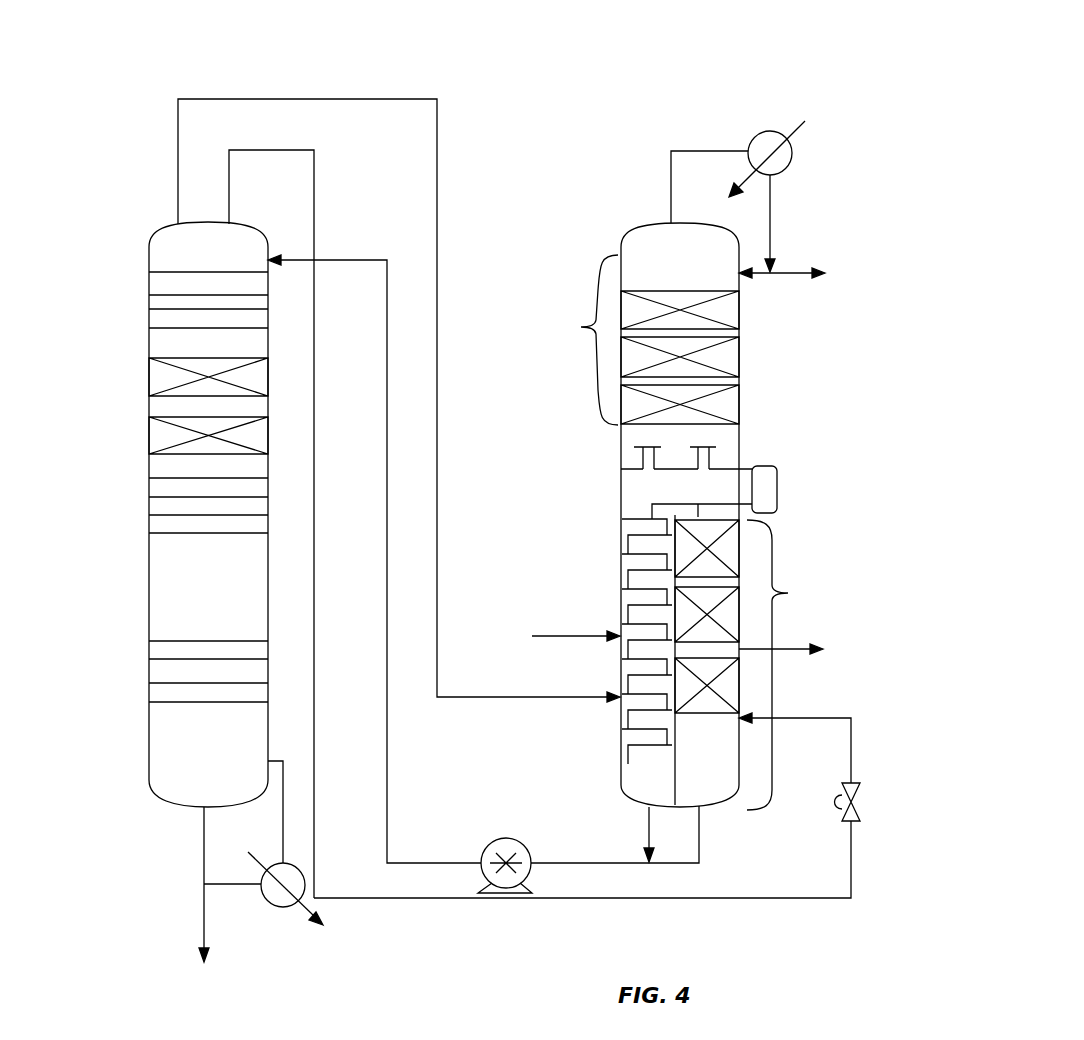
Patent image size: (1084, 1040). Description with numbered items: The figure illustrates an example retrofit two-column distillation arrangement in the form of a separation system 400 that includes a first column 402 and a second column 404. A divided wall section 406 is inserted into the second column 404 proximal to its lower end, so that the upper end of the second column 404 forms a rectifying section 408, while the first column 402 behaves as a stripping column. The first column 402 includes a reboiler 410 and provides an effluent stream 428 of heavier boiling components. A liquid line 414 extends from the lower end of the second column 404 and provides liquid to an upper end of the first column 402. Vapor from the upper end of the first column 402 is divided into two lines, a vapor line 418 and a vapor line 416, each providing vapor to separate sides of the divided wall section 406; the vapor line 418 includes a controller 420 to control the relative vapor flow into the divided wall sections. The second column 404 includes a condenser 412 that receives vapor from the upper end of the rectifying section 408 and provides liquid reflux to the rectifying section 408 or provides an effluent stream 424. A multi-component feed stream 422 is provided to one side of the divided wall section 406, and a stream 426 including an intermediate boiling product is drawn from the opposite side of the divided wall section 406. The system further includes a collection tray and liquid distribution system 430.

The separation system 400 is at (563, 58).
The first column 402 is at (149, 598).
The second column 404 is at (620, 490).
The divided wall section 406 is at (791, 665).
The rectifying section 408 is at (572, 340).
The reboiler 410 is at (283, 907).
The condenser 412 is at (792, 165).
The liquid line 414 is at (392, 822).
The vapor line 416 is at (437, 200).
The vapor line 418 is at (314, 190).
The controller 420 is at (858, 798).
The multi-component feed stream 422 is at (570, 634).
The effluent stream 424 is at (783, 274).
The stream 426 is at (790, 651).
The effluent stream 428 is at (202, 915).
The collection tray and liquid distribution system 430 is at (777, 488).